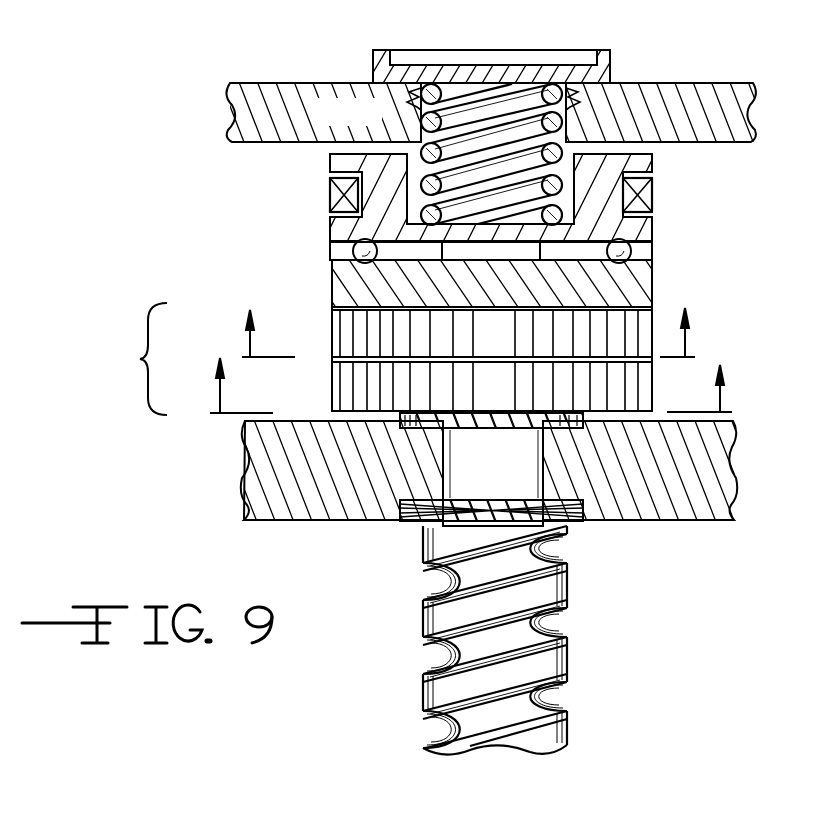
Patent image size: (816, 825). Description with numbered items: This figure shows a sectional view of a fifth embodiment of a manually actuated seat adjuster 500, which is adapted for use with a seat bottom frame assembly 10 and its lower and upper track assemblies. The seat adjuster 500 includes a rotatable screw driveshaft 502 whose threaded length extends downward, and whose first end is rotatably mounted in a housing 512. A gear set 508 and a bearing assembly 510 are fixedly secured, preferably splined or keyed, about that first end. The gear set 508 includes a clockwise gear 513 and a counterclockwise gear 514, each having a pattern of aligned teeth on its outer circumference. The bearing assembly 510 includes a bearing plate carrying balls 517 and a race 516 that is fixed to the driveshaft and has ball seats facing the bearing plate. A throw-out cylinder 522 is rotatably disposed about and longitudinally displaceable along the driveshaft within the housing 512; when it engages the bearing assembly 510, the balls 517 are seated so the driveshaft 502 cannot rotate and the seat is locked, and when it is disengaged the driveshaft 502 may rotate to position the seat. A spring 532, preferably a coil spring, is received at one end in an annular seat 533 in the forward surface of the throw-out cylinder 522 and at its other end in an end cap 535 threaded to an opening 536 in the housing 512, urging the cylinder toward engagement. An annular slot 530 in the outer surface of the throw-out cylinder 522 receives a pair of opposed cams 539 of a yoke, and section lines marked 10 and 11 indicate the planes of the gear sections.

The seat adjuster 500 is at (208, 452).
The screw driveshaft 502 is at (568, 631).
The gear set 508 is at (138, 351).
The bearing assembly 510 is at (478, 325).
The housing 512 is at (243, 112).
The clockwise gear 513 is at (330, 326).
The counterclockwise gear 514 is at (330, 377).
The race 516 is at (330, 282).
The balls 517 is at (353, 251).
The throw-out cylinder 522 is at (652, 160).
The annular slot 530 is at (330, 158).
The spring 532 is at (498, 110).
The annular seat 533 is at (412, 150).
The end cap 535 is at (402, 50).
The opening 536 is at (565, 126).
The opposed cams 539 is at (330, 197).
The seat bottom frame assembly 10 is at (479, 385).
The section line 11 is at (485, 327).